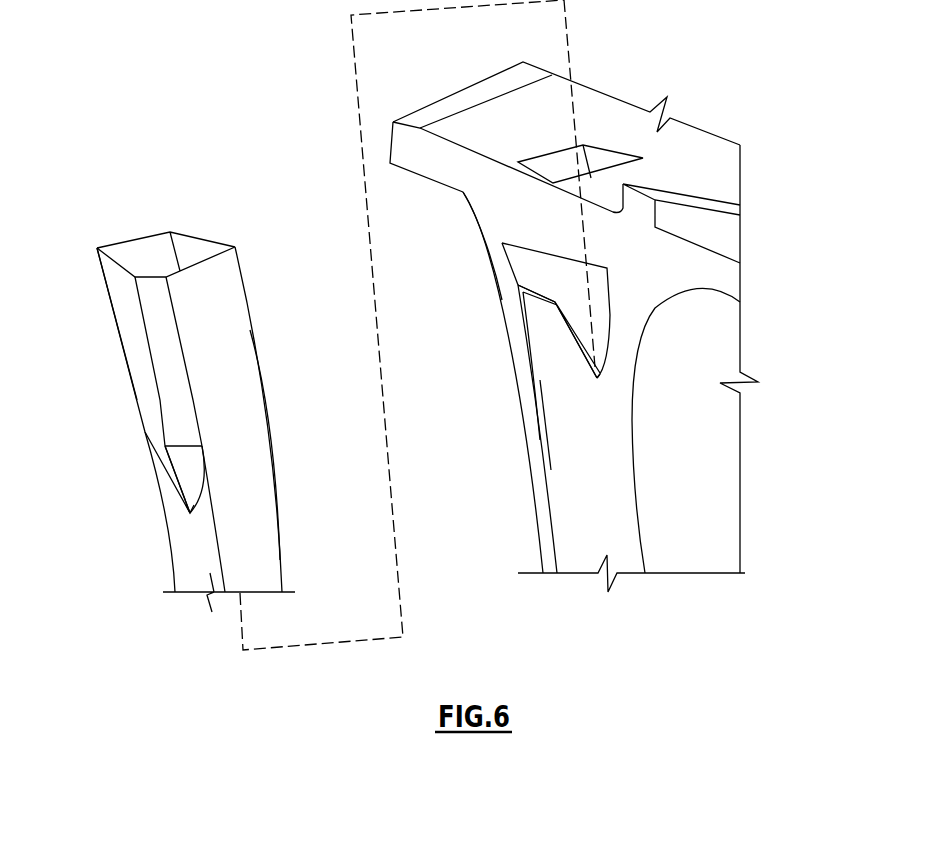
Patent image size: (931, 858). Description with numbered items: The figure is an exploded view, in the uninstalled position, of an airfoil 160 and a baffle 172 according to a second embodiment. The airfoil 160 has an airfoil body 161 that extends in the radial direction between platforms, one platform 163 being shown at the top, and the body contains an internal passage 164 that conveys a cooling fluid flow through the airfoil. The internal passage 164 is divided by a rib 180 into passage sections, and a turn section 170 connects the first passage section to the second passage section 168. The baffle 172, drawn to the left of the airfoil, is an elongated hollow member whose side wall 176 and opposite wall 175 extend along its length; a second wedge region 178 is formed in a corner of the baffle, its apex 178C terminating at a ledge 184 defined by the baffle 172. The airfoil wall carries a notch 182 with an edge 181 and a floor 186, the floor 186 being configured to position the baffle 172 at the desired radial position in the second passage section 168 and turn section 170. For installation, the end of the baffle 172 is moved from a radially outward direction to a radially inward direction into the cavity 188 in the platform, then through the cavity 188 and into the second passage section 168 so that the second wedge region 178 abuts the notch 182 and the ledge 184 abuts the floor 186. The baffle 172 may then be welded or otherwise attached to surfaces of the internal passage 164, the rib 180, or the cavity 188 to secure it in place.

The airfoil 160 is at (699, 128).
The airfoil body 161 is at (537, 505).
The platform 163 is at (720, 172).
The internal passage 164 is at (513, 253).
The second passage section 168 is at (580, 308).
The turn section 170 is at (520, 268).
The baffle 172 is at (193, 234).
The tube wall 175 is at (276, 463).
The tube side wall 176 is at (115, 322).
The second wedge region 178 is at (165, 458).
The apex 178C is at (172, 470).
The rib 180 is at (557, 392).
The tab edge 181 is at (518, 285).
The notch 182 is at (568, 350).
The ledge 184 is at (191, 513).
The floor 186 is at (598, 381).
The cavity 188 is at (608, 160).